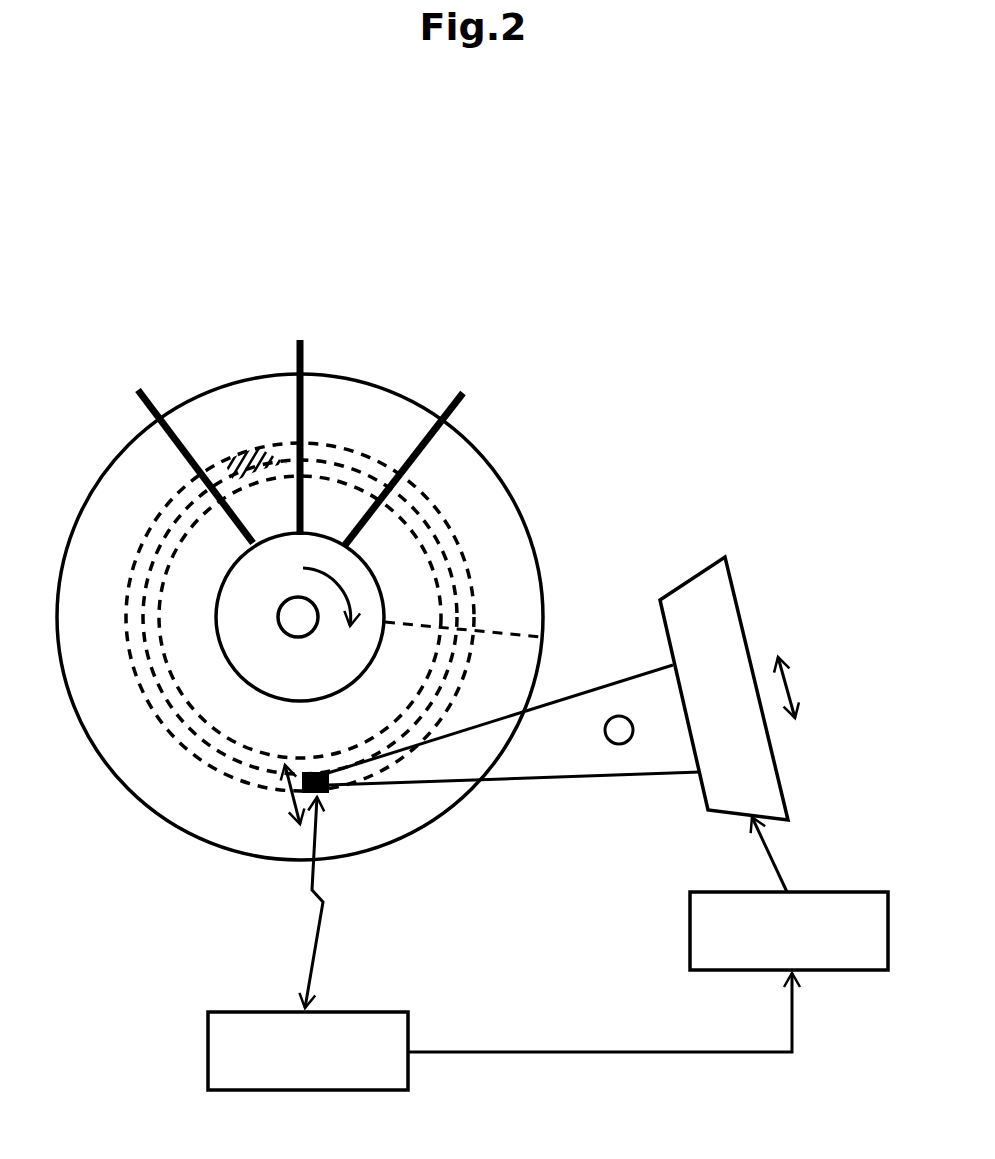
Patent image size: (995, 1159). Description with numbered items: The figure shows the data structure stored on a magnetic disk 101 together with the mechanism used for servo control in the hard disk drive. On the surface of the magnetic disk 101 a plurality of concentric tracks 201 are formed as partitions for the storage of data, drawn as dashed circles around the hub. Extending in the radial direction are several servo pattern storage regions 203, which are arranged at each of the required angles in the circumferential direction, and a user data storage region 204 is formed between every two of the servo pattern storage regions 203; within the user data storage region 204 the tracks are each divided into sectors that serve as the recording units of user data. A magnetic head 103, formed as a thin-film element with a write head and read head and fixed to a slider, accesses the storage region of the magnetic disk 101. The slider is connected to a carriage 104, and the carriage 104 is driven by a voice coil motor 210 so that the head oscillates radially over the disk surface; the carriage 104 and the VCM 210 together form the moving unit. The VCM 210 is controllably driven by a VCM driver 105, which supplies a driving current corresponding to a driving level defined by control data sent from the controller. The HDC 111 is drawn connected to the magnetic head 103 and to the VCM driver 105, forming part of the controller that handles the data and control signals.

The magnetic disk 101 is at (135, 795).
The magnetic head 103 is at (330, 792).
The carriage 104 is at (533, 781).
The VCM driver 105 is at (823, 892).
The HDC 111 is at (387, 1012).
The concentric tracks 201 is at (452, 537).
The servo pattern storage region 203 is at (160, 420).
The user data storage region 204 is at (186, 457).
The voice coil motor (VCM) 210 is at (780, 783).